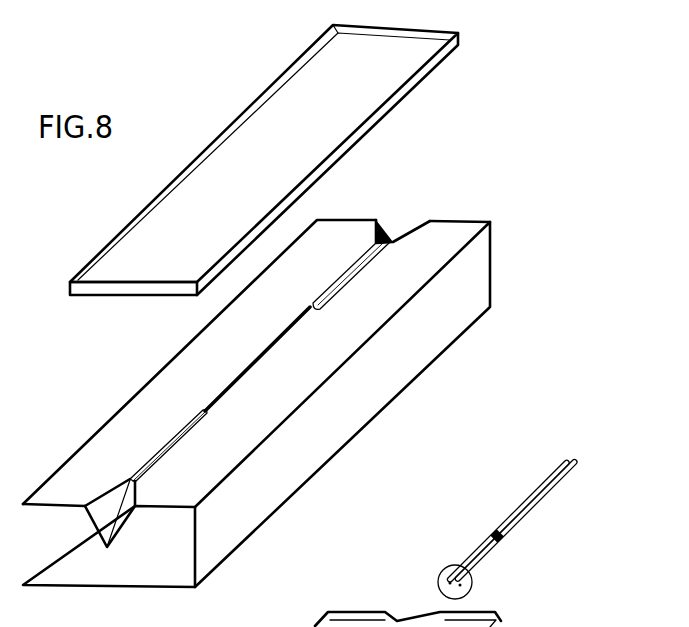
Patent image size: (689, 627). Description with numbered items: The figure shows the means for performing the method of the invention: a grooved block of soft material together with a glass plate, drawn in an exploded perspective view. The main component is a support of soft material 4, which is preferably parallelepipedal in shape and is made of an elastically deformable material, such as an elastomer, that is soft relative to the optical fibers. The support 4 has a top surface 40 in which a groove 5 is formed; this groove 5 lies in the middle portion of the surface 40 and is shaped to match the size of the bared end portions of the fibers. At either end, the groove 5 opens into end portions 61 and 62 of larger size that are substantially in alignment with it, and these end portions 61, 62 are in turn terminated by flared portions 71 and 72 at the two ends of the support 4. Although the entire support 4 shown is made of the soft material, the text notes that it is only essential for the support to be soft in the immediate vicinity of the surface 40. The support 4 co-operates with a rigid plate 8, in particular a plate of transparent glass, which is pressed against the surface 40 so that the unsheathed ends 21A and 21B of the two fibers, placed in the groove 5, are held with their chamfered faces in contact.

The rigid plate 8 is at (245, 152).
The support of soft material 4 is at (480, 247).
The top surface 40 is at (438, 237).
The groove 5 is at (257, 358).
The end portion 61 is at (152, 453).
The end portion 62 is at (373, 262).
The flared portion 71 is at (100, 530).
The flared portion 72 is at (387, 228).
The unsheathed end 21A is at (477, 557).
The unsheathed end 21B is at (497, 555).